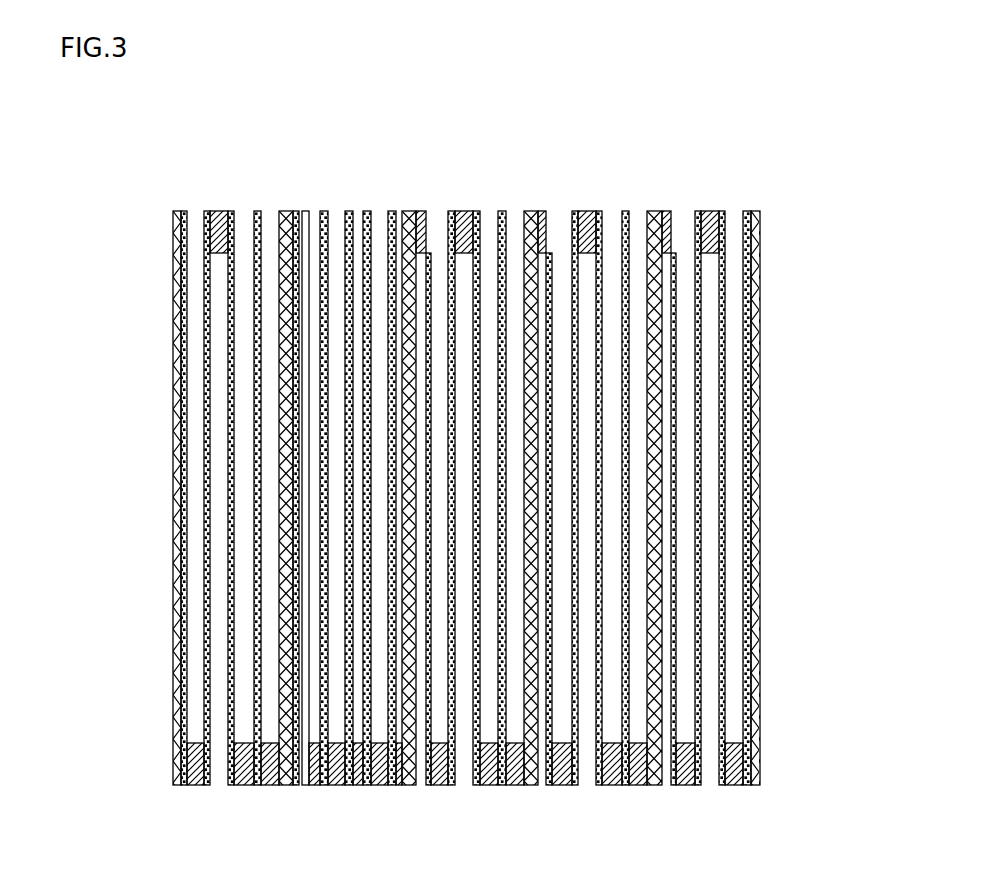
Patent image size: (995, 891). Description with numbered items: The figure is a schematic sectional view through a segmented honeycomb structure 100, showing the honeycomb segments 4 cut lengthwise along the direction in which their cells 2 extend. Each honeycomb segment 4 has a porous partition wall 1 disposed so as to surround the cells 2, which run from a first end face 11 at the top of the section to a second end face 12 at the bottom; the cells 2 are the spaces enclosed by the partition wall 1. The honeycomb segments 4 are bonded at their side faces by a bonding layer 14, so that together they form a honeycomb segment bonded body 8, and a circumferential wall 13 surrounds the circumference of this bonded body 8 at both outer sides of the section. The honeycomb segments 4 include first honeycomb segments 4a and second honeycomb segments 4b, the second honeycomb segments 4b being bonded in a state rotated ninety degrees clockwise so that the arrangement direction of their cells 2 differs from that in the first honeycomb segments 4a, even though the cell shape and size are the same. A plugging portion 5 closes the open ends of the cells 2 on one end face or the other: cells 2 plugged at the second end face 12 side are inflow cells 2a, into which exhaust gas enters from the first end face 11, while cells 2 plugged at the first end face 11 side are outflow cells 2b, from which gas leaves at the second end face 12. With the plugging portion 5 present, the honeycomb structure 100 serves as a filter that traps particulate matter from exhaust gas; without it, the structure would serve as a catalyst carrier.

The honeycomb structure 100 is at (836, 65).
The first end face 11 is at (194, 177).
The circumferential wall 13 is at (180, 374).
The honeycomb segment 4 is at (477, 424).
The first honeycomb segment 4a is at (247, 192).
The second honeycomb segment 4b is at (351, 190).
The bonding layer 14 is at (420, 209).
The partition wall 1 is at (571, 232).
The plugging portion 5 is at (590, 212).
The cell 2 is at (468, 514).
The inflow cell 2a is at (615, 255).
The outflow cell 2b is at (590, 762).
The second end face 12 is at (233, 800).
The honeycomb segment bonded body 8 is at (760, 190).